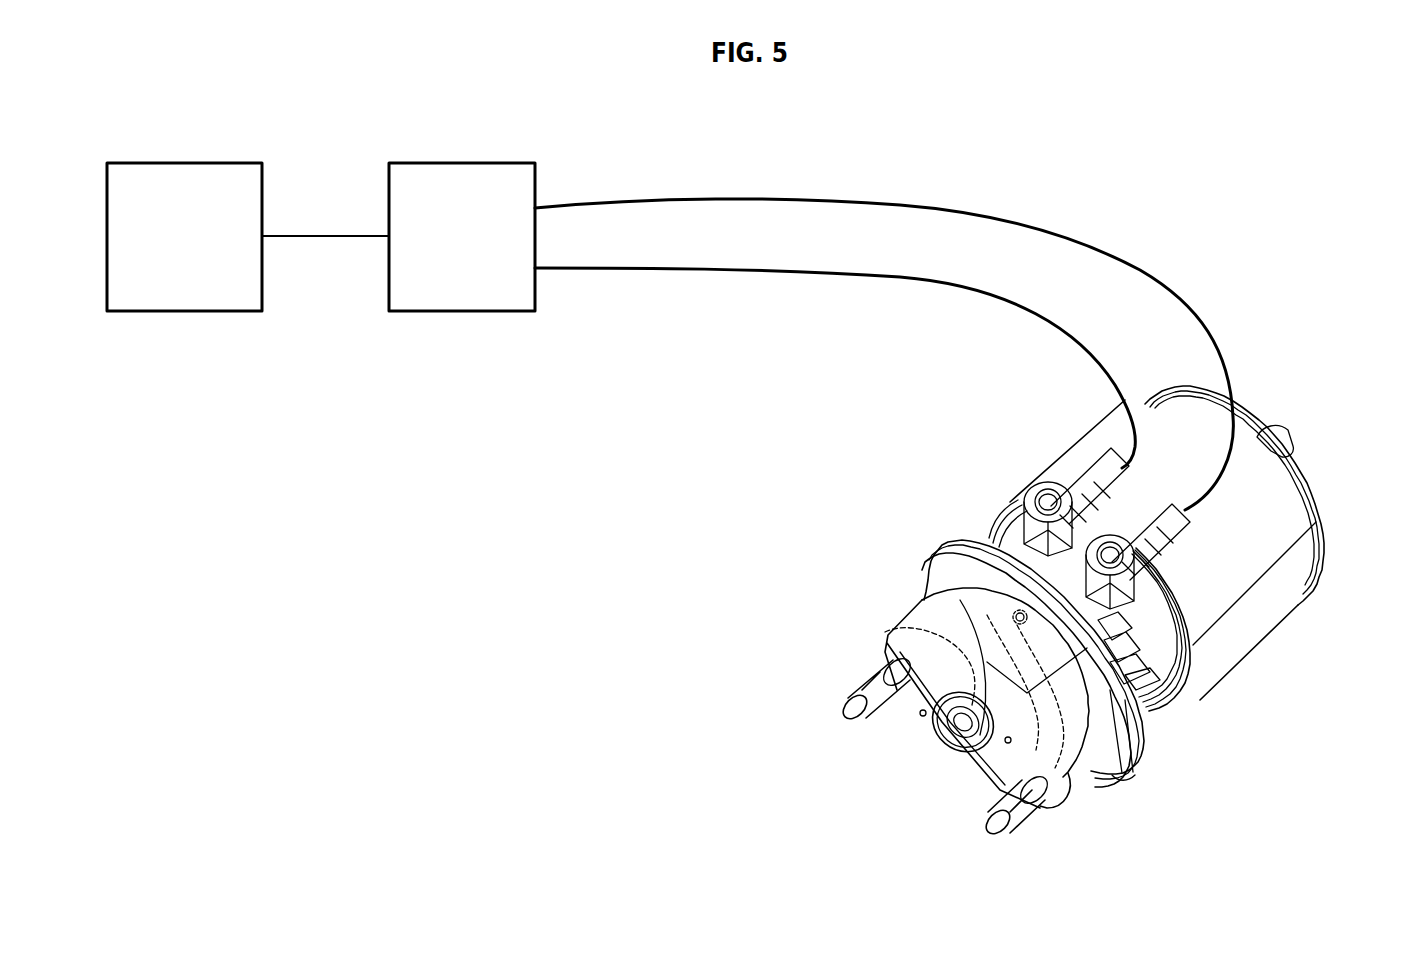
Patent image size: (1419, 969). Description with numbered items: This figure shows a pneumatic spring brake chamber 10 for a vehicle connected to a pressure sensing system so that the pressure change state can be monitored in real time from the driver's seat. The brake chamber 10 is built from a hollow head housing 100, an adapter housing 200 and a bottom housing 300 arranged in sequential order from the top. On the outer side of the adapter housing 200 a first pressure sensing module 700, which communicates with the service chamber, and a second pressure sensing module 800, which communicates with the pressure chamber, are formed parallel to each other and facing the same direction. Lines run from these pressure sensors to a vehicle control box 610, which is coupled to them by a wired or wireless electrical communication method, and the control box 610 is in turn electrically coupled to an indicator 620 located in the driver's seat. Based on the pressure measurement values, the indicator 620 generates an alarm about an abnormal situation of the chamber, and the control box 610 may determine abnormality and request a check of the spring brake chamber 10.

The pneumatic spring brake chamber 10 is at (1273, 410).
The head housing 100 is at (1220, 549).
The adapter housing 200 is at (1197, 703).
The bottom housing 300 is at (1130, 773).
The first pressure sensing module 700 is at (1150, 550).
The second pressure sensing module 800 is at (1110, 462).
The control box 610 is at (502, 163).
The indicator 620 is at (227, 163).